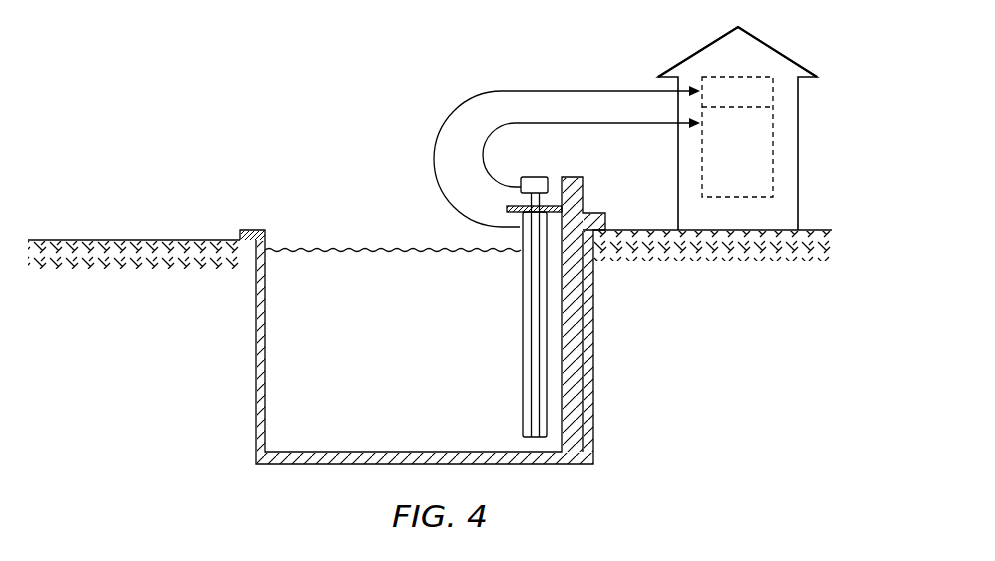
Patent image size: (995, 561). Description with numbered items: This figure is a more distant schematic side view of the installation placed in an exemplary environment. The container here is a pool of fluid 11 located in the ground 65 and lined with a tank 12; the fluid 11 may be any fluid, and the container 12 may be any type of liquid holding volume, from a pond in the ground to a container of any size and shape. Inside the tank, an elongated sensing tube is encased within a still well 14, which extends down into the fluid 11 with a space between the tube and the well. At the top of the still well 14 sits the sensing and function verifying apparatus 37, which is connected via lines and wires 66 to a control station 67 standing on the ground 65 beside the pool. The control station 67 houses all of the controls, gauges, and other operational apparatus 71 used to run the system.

The fluid 11 is at (378, 301).
The container 12 is at (256, 348).
The still well 14 is at (523, 347).
The sensing and function verifying apparatus 37 is at (537, 168).
The ground 65 is at (157, 238).
The lines and wires 66 is at (555, 82).
The control station 67 is at (700, 50).
The operational apparatus 71 is at (758, 147).